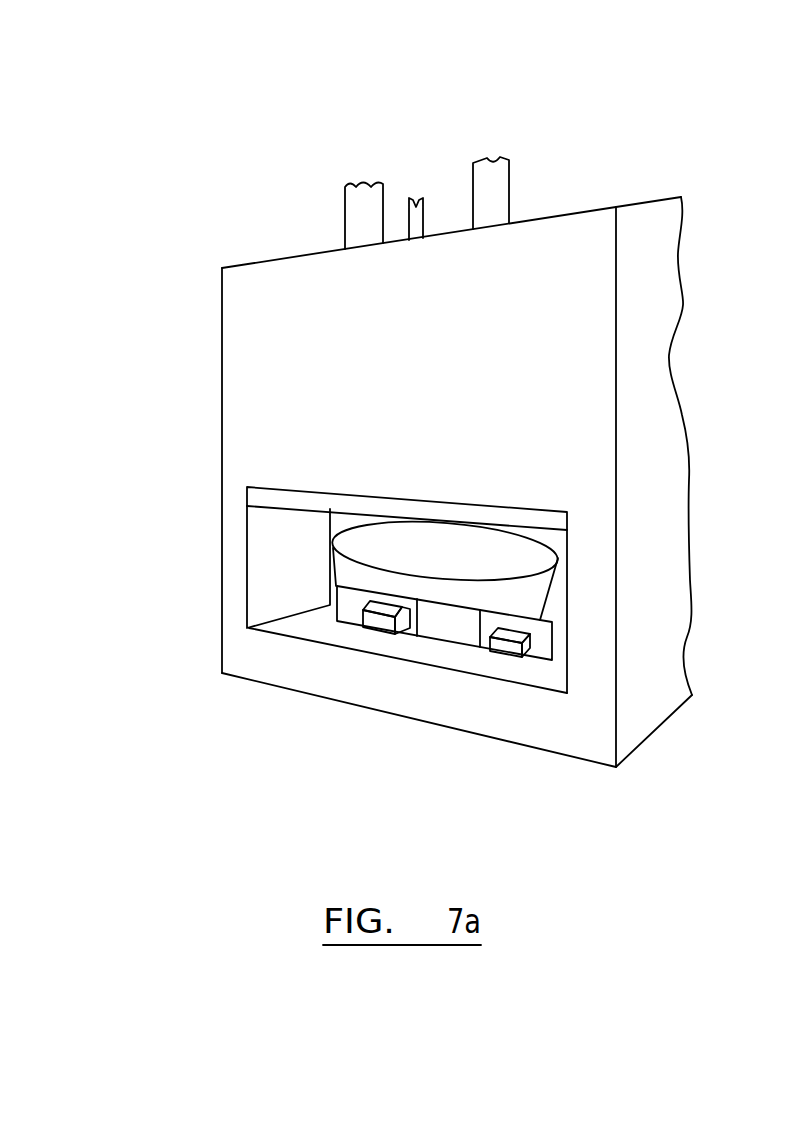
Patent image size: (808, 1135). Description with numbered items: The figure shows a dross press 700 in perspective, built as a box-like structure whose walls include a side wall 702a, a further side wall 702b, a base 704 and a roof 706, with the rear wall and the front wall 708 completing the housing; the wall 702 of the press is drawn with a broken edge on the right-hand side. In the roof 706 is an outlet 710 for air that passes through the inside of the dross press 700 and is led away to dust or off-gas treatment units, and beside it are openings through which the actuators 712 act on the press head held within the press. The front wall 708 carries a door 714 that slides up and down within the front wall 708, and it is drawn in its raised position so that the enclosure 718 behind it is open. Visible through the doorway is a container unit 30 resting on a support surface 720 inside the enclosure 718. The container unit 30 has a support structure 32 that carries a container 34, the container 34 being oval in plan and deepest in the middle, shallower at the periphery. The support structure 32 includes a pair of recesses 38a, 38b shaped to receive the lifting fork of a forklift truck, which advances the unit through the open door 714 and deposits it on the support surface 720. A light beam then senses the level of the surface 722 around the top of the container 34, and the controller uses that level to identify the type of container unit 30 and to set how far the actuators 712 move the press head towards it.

The dross press 700 is at (572, 153).
The side wall 702 is at (807, 208).
The side wall 702a is at (643, 337).
The further side wall 702b is at (218, 331).
The base 704 is at (557, 730).
The roof 706 is at (531, 208).
The front wall 708 is at (577, 268).
The outlet 710 is at (418, 198).
The actuators 712 is at (363, 203).
The door 714 is at (488, 520).
The enclosure 718 is at (283, 535).
The support surface 720 is at (305, 628).
The surface 722 is at (388, 560).
The container unit 30 is at (340, 633).
The support structure 32 is at (450, 633).
The container 34 is at (520, 558).
The recess 38a is at (378, 623).
The recess 38b is at (502, 648).